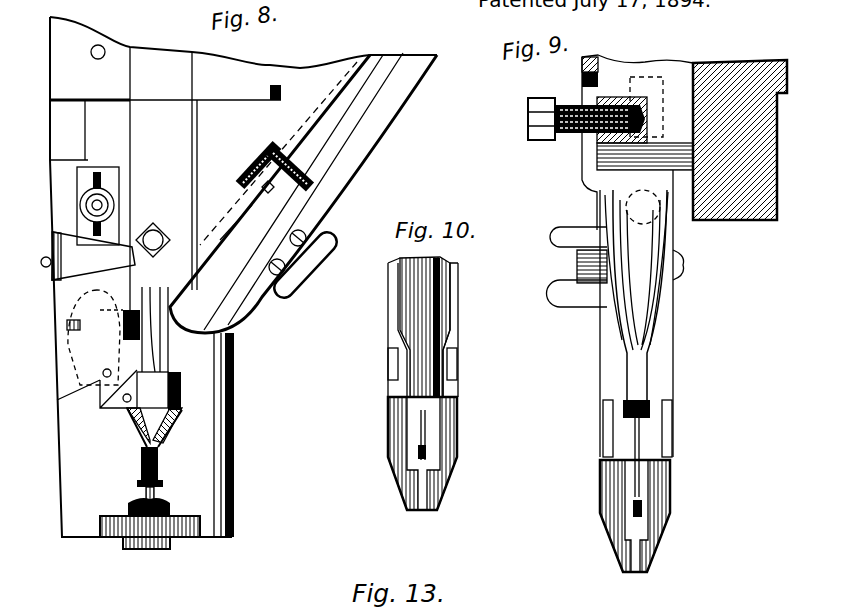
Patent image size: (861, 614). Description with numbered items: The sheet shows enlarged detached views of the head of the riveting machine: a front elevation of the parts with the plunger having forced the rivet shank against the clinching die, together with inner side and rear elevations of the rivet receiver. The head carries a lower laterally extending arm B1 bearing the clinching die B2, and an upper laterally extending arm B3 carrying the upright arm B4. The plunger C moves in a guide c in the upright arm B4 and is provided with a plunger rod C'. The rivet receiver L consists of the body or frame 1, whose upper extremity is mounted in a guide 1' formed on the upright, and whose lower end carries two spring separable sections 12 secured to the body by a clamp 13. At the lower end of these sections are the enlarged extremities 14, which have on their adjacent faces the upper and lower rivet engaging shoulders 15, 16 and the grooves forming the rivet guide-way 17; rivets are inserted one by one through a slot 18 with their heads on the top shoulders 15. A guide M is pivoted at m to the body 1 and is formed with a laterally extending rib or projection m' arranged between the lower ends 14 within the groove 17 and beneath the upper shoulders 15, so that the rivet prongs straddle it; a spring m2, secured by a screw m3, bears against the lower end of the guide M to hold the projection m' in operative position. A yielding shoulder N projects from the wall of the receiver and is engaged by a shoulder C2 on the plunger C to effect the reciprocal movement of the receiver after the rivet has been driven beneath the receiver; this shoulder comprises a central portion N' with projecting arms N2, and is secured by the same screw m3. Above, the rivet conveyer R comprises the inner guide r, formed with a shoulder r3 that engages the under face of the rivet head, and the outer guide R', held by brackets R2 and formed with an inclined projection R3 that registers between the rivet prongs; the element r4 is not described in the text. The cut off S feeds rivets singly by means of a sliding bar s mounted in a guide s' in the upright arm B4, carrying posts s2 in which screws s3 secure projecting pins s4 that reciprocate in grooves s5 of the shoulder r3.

In FIG. 8, the upright arm B4 is at (82, 38).
In FIG. 9, the upright arm B4 is at (728, 215).
In FIG. 8, the upper laterally extending arm B3 is at (220, 492).
In FIG. 8, the clinching die B2 is at (170, 506).
In FIG. 8, the laterally extending arm B1 is at (110, 532).
In FIG. 8, the body or frame of the rivet receiver 1 is at (39, 210).
In FIG. 10, the body or frame of the rivet receiver 1 is at (435, 327).
In FIG. 9, the body or frame of the rivet receiver 1 is at (653, 313).
In FIG. 8, the guide 1' is at (112, 132).
In FIG. 8, the spring separable sections 12 is at (181, 402).
In FIG. 10, the spring separable sections 12 is at (395, 400).
In FIG. 9, the spring separable sections 12 is at (603, 466).
In FIG. 8, the clamp 13 is at (108, 203).
In FIG. 9, the clamp 13 is at (577, 266).
In FIG. 8, the enlarged extremities 14 is at (170, 376).
In FIG. 10, the enlarged extremities 14 is at (392, 419).
In FIG. 9, the enlarged extremities 14 is at (603, 479).
In FIG. 8, the upper rivet engaging shoulders 15 is at (180, 387).
In FIG. 10, the upper rivet engaging shoulders 15 is at (386, 380).
In FIG. 9, the upper rivet engaging shoulders 15 is at (604, 456).
In FIG. 8, the lower rivet engaging shoulders 16 is at (168, 433).
In FIG. 10, the lower rivet engaging shoulders 16 is at (436, 472).
In FIG. 9, the lower rivet engaging shoulders 16 is at (650, 555).
In FIG. 10, the rivet guide-way 17 is at (407, 462).
In FIG. 9, the rivet guide-way 17 is at (625, 518).
In FIG. 10, the slot 18 is at (505, 391).
In FIG. 9, the slot 18 is at (719, 461).
In FIG. 8, the plunger C is at (155, 168).
In FIG. 9, the plunger C is at (586, 153).
In FIG. 8, the plunger rod C' is at (162, 393).
In FIG. 10, the plunger rod C' is at (434, 319).
In FIG. 9, the plunger rod C' is at (623, 304).
In FIG. 8, the plunger shoulder C2 is at (140, 324).
In FIG. 9, the plunger shoulder C2 is at (600, 232).
In FIG. 9, the guide c is at (582, 74).
In FIG. 8, the rivet receiver L is at (154, 409).
In FIG. 10, the rivet receiver L is at (445, 428).
In FIG. 9, the rivet receiver L is at (662, 484).
In FIG. 8, the guide M is at (78, 386).
In FIG. 10, the guide M is at (418, 452).
In FIG. 9, the guide M is at (633, 498).
In FIG. 8, the pivot m is at (54, 329).
In FIG. 8, the rib or projection m' is at (104, 450).
In FIG. 10, the rib or projection m' is at (457, 435).
In FIG. 9, the rib or projection m' is at (674, 466).
In FIG. 8, the spring m2 is at (62, 303).
In FIG. 8, the screw m3 is at (43, 262).
In FIG. 8, the yielding shoulder N is at (93, 256).
In FIG. 8, the central portion N' is at (42, 237).
In FIG. 8, the projecting arms N2 is at (136, 260).
In FIG. 8, the rivet conveyer R is at (303, 193).
In FIG. 8, the outer guide R' is at (353, 210).
In FIG. 8, the brackets R2 is at (314, 272).
In FIG. 8, the inclined projection R3 is at (262, 303).
In FIG. 8, the inner guide r is at (238, 185).
In FIG. 8, the shoulder r3 is at (228, 217).
In FIG. 8, the rod guide r4 is at (211, 271).
In FIG. 8, the cut off S is at (268, 145).
In FIG. 8, the guide s' is at (255, 139).
In FIG. 8, the sliding bar s is at (248, 155).
In FIG. 8, the posts s2 is at (300, 173).
In FIG. 8, the screws s3 is at (314, 188).
In FIG. 8, the projecting pins s4 is at (274, 196).
In FIG. 8, the grooves s5 is at (252, 168).